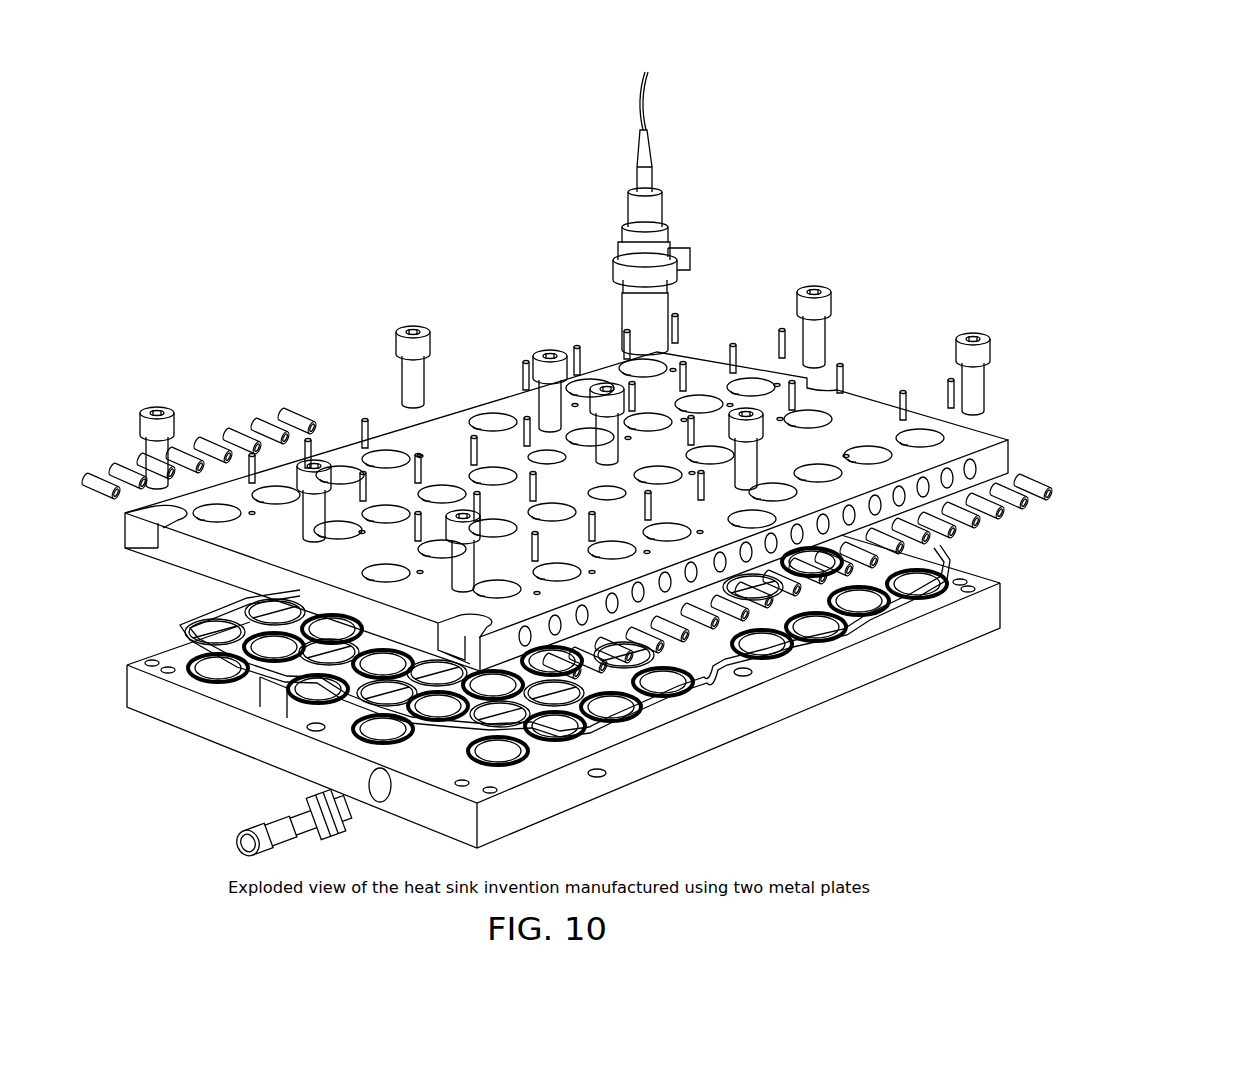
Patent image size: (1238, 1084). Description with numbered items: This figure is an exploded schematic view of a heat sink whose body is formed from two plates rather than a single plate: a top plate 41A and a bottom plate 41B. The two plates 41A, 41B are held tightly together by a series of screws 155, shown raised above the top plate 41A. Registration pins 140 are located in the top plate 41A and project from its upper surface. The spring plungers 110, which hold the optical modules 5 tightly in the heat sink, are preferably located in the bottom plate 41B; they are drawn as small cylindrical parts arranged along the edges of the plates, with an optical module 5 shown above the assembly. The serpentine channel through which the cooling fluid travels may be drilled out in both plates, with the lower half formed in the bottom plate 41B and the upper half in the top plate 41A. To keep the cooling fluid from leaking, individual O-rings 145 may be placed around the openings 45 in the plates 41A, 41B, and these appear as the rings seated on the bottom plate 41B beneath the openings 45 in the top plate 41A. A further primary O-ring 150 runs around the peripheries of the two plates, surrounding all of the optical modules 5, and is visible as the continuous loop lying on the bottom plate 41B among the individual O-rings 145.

The optical module 5 is at (673, 180).
The screws 155 is at (840, 292).
The top plate 41A is at (863, 391).
The registration pins 140 is at (687, 358).
The spring plungers 110 is at (291, 418).
The openings 45 is at (680, 501).
The bottom plate 41B is at (1012, 601).
The primary O-ring 150 is at (845, 625).
The O-rings 145 is at (548, 724).